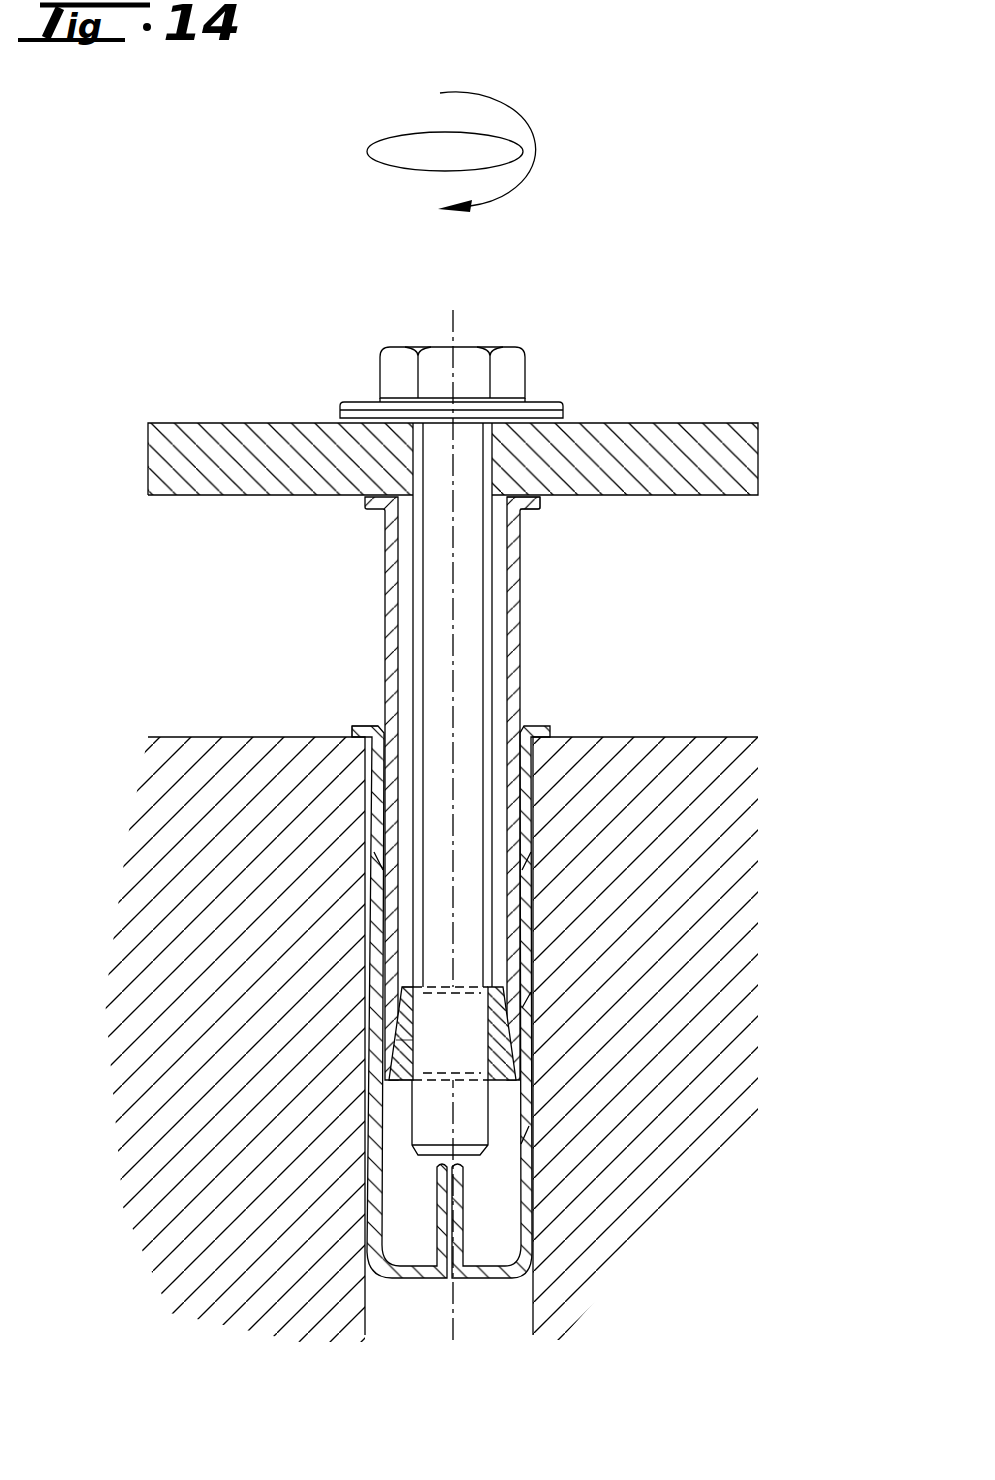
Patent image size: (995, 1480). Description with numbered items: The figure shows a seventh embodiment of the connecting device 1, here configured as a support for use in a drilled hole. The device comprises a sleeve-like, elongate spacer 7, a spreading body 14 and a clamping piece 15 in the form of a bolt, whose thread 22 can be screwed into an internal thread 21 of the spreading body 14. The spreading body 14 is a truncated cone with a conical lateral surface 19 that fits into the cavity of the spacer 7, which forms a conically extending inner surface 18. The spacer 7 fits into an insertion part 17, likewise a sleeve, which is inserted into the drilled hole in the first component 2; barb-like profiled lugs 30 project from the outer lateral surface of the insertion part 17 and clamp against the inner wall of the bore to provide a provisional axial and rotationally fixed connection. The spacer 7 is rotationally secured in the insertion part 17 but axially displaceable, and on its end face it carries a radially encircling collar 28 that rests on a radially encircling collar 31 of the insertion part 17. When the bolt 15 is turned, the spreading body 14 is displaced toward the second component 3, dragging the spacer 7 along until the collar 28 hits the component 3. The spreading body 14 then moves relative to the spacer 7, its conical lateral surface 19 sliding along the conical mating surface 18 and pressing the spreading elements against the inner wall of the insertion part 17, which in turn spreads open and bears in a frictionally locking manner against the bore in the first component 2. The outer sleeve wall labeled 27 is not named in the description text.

The connecting device 1 is at (128, 662).
The first component 2 is at (731, 737).
The second component 3 is at (727, 423).
The spacer 7 is at (362, 581).
The spreading body 14 is at (398, 1098).
The clamping piece 15 is at (527, 367).
The insertion part 17 is at (362, 957).
The conically extending inner surface 18 is at (405, 990).
The conical lateral surface 19 is at (410, 1050).
The internal thread 21 is at (482, 1038).
The thread 22 is at (485, 603).
The outer sleeve 27 is at (368, 833).
The collar 28 is at (530, 497).
The barb-like profiled lugs 30 is at (530, 993).
The collar 31 is at (360, 726).